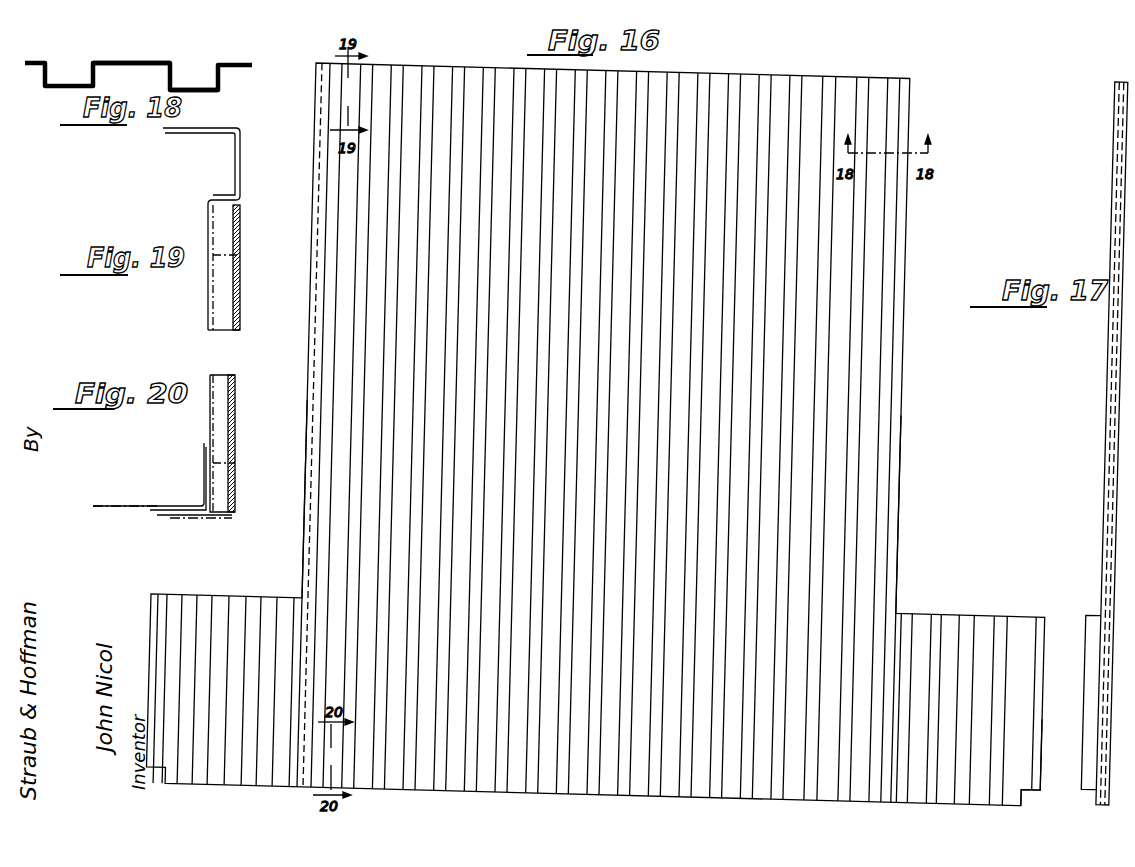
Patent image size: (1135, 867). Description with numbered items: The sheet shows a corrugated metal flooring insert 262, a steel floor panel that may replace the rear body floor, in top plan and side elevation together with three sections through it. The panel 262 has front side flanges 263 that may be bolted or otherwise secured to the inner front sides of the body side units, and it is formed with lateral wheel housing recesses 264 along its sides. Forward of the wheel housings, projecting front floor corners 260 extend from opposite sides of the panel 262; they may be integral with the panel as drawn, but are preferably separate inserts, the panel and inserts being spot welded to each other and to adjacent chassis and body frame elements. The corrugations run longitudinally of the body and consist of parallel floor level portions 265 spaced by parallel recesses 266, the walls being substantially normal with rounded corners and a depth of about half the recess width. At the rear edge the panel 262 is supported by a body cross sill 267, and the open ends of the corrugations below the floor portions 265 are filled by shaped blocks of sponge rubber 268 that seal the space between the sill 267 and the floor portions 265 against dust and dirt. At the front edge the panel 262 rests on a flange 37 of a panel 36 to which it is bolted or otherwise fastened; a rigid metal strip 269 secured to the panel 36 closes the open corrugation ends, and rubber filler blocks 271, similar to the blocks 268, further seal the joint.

In FIG. 16, the corrugated metal flooring insert 262 is at (905, 439).
In FIG. 17, the corrugated metal flooring insert 262 is at (1110, 239).
In FIG. 18, the corrugated metal flooring insert 262 is at (242, 69).
In FIG. 16, the front side flanges 263 is at (1043, 617).
In FIG. 17, the front side flanges 263 is at (1085, 613).
In FIG. 16, the lateral wheel housing recesses 264 is at (904, 523).
In FIG. 16, the projecting front floor corners 260 is at (207, 621).
In FIG. 18, the floor level portions 265 is at (133, 60).
In FIG. 20, the floor level portions 265 is at (233, 375).
In FIG. 18, the recesses 266 is at (190, 87).
In FIG. 19, the body cross sill 267 is at (240, 173).
In FIG. 19, the blocks of sponge rubber 268 is at (226, 243).
In FIG. 20, the rigid metal strip 269 is at (170, 518).
In FIG. 20, the rubber filler blocks 271 is at (226, 496).
In FIG. 20, the panel 36 is at (120, 508).
In FIG. 20, the flange 37 is at (203, 477).